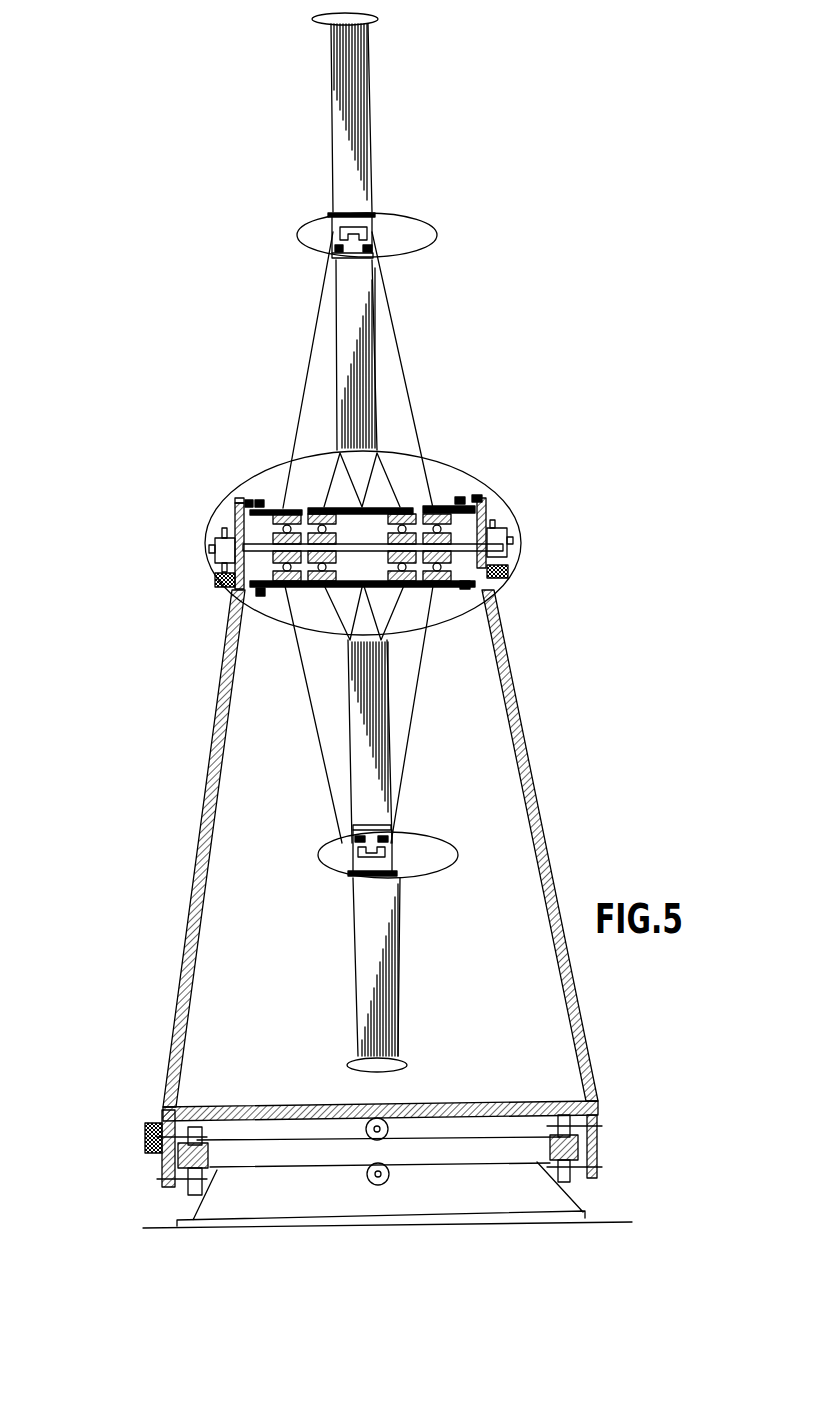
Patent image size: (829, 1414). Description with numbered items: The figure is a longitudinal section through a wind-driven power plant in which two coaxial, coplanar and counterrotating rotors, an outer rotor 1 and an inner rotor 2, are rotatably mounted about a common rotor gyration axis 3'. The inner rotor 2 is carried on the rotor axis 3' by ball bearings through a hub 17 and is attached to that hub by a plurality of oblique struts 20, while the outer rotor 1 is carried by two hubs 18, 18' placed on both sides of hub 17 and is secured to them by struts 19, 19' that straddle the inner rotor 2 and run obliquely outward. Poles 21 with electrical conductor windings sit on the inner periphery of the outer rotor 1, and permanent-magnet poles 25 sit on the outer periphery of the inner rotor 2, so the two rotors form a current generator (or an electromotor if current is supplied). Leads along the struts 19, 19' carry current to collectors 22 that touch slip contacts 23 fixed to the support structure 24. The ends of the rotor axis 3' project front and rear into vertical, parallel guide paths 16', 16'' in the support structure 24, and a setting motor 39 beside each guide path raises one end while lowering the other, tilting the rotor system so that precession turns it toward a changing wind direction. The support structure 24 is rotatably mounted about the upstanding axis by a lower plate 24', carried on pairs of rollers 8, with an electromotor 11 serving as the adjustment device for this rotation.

The outer rotor 1 is at (352, 97).
The inner rotor 2 is at (357, 373).
The rotor gyration axis 3' is at (429, 569).
The pairs of rollers 8 is at (197, 1188).
The electromotor 11 is at (145, 1140).
The guide path 16' is at (192, 525).
The guide path 16'' is at (548, 508).
The hub 17 is at (428, 503).
The hub 18 is at (257, 449).
The hub 18' is at (483, 451).
The strut 19 is at (275, 537).
The strut 19' is at (443, 537).
The oblique struts 20 is at (384, 507).
The poles 21 is at (367, 230).
The collectors 22 is at (493, 603).
The slip contacts 23 is at (481, 497).
The support structure 24 is at (380, 848).
The plate 24' is at (380, 1085).
The poles 25 is at (371, 251).
The setting motor 39 is at (509, 546).